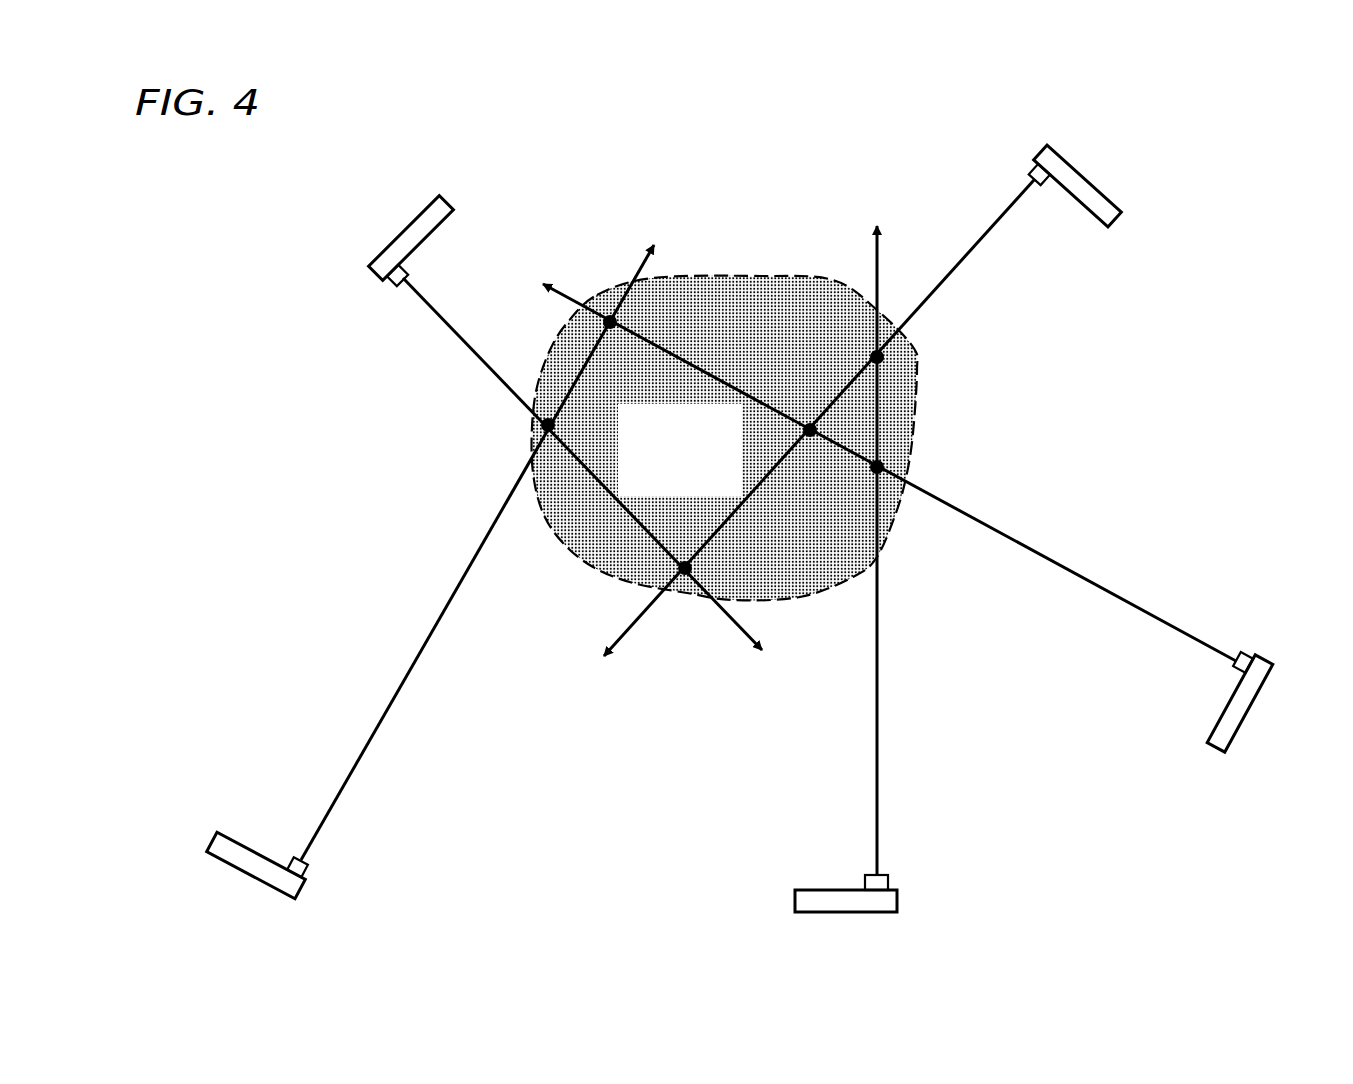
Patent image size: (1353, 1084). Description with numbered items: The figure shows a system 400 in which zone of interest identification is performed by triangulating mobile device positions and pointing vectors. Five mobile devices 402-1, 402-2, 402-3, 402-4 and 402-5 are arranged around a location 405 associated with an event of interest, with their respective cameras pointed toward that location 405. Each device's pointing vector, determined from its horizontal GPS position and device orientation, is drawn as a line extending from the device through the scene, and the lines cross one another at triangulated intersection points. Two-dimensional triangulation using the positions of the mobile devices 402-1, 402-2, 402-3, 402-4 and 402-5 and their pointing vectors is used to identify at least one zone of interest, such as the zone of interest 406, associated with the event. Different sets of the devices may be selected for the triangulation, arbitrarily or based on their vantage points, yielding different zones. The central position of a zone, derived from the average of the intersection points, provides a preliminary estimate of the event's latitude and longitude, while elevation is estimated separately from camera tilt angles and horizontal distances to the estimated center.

The system 400 is at (241, 187).
The mobile device 402-1 is at (403, 225).
The mobile device 402-2 is at (1090, 178).
The mobile device 402-3 is at (225, 862).
The mobile device 402-4 is at (822, 890).
The mobile device 402-5 is at (1205, 745).
The location 405 is at (745, 273).
The zone of interest 406 is at (696, 494).